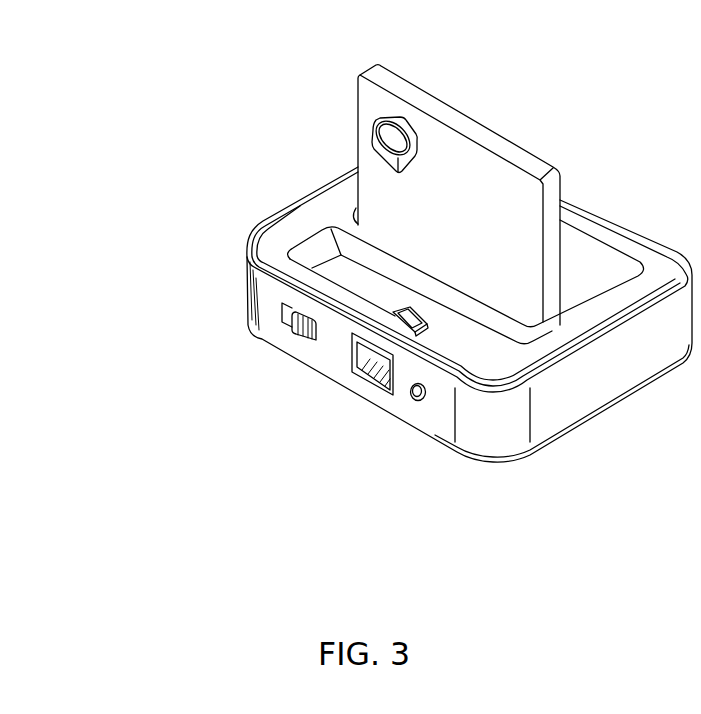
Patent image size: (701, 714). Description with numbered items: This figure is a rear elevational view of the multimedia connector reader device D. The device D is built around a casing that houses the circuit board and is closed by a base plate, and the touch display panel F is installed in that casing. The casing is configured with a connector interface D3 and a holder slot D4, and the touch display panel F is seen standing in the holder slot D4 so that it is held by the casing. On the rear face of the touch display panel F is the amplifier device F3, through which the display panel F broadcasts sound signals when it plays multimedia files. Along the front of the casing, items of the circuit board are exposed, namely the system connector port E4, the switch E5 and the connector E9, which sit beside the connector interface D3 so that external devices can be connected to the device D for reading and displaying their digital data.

The multimedia connector reader device D is at (278, 167).
The connector interface D3 is at (413, 325).
The holder slot D4 is at (323, 270).
The system connector port E4 is at (367, 382).
The switch E5 is at (288, 320).
The connector E9 is at (418, 402).
The touch display panel F is at (440, 108).
The amplifier device F3 is at (392, 140).